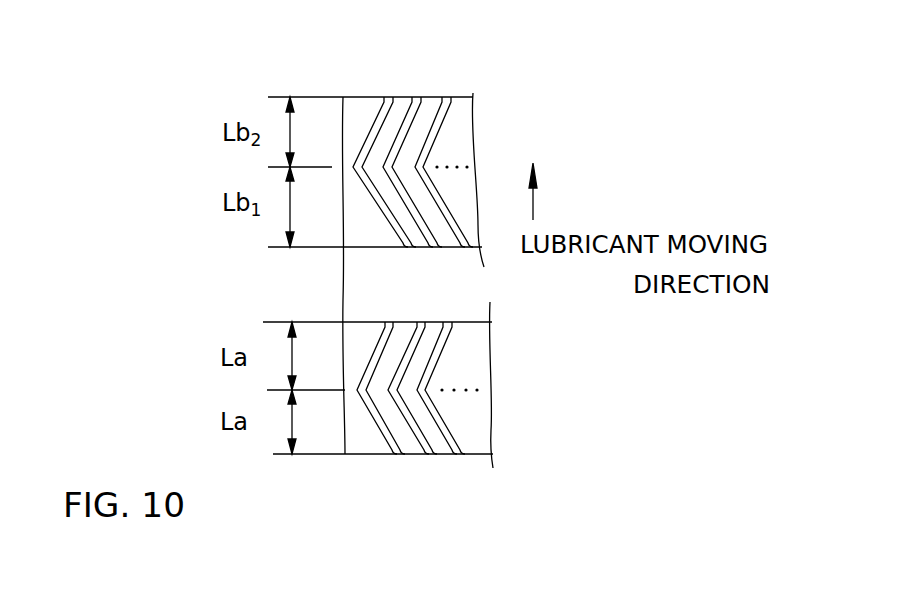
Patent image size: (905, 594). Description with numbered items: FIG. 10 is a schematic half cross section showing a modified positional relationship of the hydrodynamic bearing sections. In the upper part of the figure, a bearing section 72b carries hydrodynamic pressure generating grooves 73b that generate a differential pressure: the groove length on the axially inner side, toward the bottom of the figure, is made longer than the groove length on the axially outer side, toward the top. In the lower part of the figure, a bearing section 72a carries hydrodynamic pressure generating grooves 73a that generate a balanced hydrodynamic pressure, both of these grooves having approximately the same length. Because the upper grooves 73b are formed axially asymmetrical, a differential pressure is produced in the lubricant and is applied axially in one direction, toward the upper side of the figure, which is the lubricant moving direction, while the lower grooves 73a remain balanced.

The second sliding member 72b is at (462, 133).
The hydrodynamic pressure generating grooves 73b is at (446, 120).
The first sliding member 72a is at (477, 373).
The hydrodynamic pressure generating grooves 73a is at (433, 358).